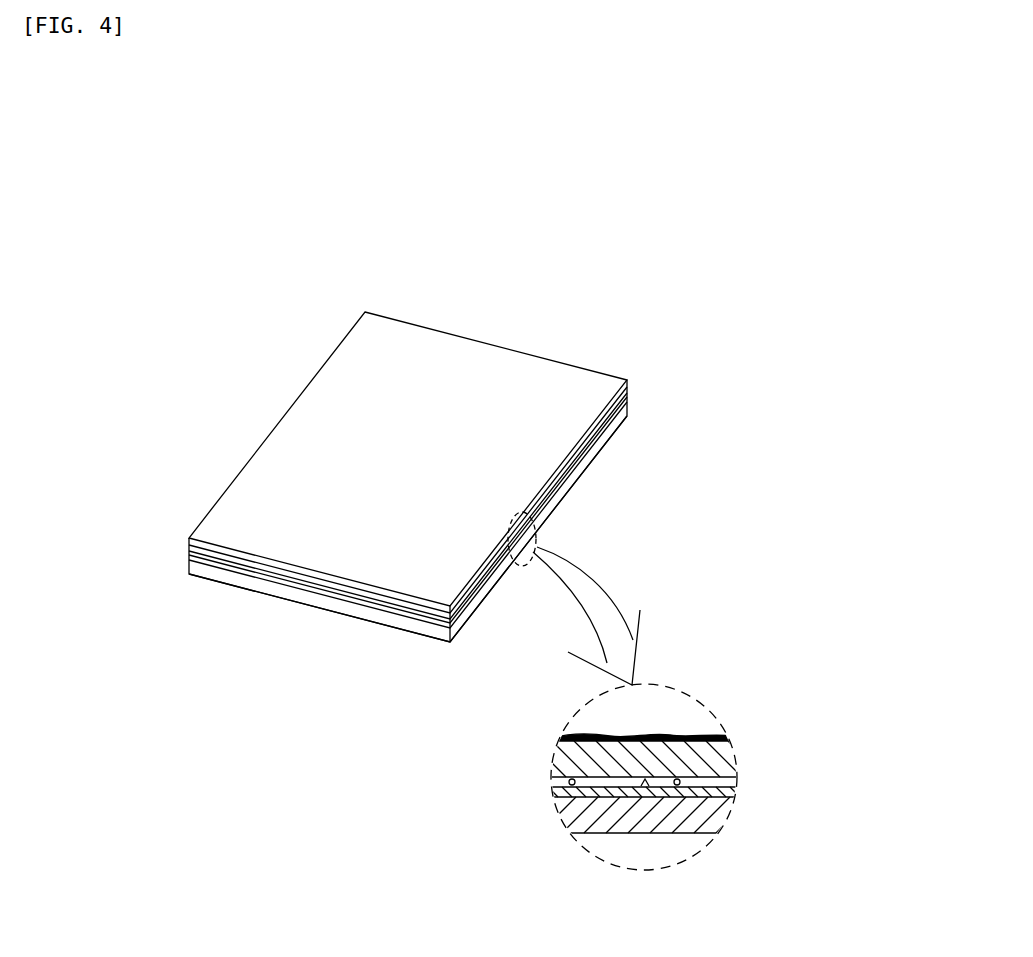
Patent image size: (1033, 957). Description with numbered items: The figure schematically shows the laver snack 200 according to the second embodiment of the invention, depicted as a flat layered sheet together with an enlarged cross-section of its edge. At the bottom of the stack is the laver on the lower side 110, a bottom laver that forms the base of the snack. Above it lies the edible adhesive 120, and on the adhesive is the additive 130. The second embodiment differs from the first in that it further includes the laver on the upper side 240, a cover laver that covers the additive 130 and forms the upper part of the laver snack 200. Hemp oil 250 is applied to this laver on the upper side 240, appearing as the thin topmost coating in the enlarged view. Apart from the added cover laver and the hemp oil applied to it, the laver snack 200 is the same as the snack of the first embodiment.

The laver snack 200 is at (580, 292).
The hemp oil 250 is at (188, 553).
The laver on the upper side 240 is at (197, 574).
The additive 130 is at (322, 605).
The edible adhesive 120 is at (268, 585).
The laver on the lower side 110 is at (234, 582).